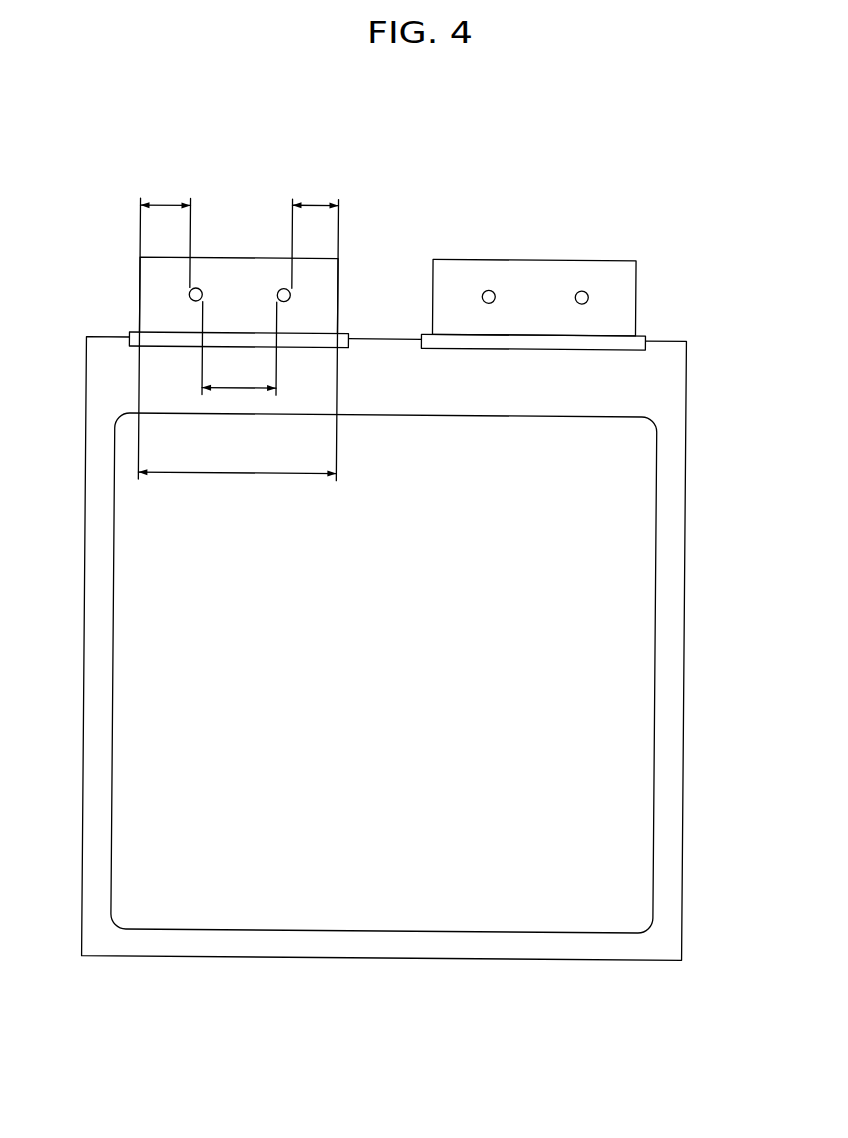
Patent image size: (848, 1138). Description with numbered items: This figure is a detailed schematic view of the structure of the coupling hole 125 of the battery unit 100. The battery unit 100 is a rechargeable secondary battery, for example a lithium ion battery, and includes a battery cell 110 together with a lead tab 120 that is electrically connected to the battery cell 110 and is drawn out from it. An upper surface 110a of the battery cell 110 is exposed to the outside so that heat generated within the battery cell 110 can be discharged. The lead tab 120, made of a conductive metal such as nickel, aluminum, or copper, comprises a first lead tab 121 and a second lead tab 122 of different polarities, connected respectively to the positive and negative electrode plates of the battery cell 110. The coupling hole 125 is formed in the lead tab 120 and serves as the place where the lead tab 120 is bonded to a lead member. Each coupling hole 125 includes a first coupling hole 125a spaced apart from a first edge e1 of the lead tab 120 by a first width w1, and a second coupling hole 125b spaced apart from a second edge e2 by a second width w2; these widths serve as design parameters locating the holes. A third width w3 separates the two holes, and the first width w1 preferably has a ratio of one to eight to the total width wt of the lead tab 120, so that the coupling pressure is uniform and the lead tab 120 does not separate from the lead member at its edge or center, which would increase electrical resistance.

The battery unit 100 is at (399, 518).
The battery cell 110 is at (656, 658).
The upper surface of the battery cell 110a is at (592, 712).
The lead tab 120 is at (387, 242).
The first lead tab 121 is at (244, 264).
The second lead tab 122 is at (527, 275).
The coupling hole 125 is at (357, 298).
The first coupling hole 125a is at (187, 301).
The second coupling hole 125b is at (281, 303).
The first edge e1 is at (137, 302).
The second edge e2 is at (335, 293).
The first width w1 is at (165, 233).
The second width w2 is at (315, 234).
The third width w3 is at (239, 349).
The total width wt is at (237, 462).